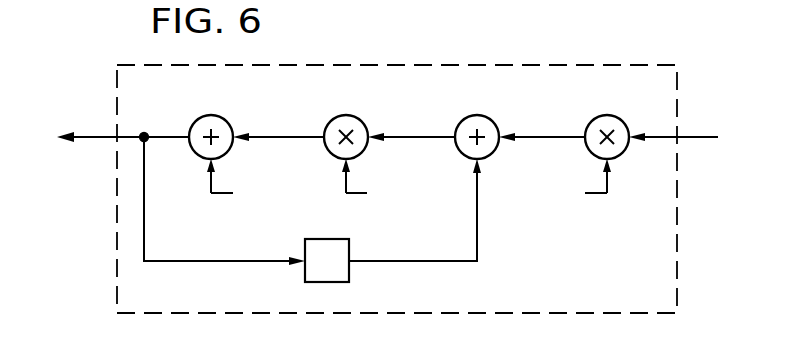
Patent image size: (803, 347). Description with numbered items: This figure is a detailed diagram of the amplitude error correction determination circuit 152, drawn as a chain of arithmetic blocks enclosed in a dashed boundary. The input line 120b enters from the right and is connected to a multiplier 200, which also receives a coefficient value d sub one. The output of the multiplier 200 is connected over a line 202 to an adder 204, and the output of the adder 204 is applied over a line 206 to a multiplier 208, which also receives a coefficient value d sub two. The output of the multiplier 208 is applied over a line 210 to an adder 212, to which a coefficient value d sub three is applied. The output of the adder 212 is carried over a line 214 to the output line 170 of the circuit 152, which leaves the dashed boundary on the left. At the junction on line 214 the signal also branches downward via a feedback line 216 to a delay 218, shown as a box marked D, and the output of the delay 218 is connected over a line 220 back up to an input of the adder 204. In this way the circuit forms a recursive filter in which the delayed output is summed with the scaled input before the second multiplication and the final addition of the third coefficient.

The amplitude error correction determination circuit 152 is at (485, 63).
The output line 170 is at (93, 137).
The line 214 is at (168, 137).
The adder 212 is at (203, 115).
The line 210 is at (262, 137).
The multiplier 208 is at (340, 116).
The line 206 is at (395, 137).
The adder 204 is at (474, 116).
The line 202 is at (525, 137).
The multiplier 200 is at (605, 116).
The input line 120b is at (702, 137).
The feedback line 216 is at (228, 262).
The delay 218 is at (350, 279).
The line 220 is at (477, 220).